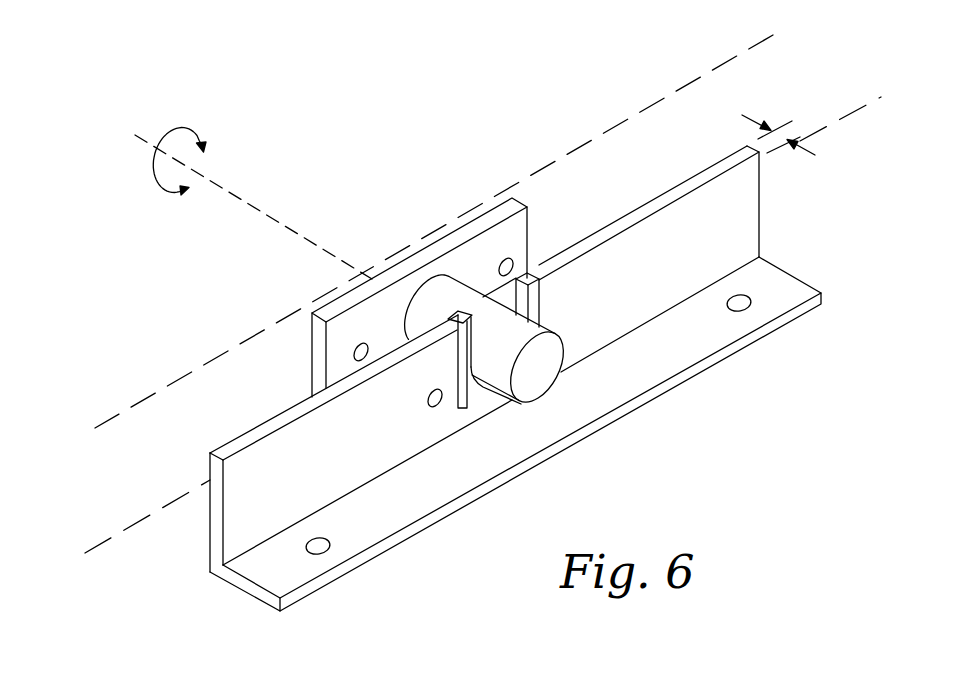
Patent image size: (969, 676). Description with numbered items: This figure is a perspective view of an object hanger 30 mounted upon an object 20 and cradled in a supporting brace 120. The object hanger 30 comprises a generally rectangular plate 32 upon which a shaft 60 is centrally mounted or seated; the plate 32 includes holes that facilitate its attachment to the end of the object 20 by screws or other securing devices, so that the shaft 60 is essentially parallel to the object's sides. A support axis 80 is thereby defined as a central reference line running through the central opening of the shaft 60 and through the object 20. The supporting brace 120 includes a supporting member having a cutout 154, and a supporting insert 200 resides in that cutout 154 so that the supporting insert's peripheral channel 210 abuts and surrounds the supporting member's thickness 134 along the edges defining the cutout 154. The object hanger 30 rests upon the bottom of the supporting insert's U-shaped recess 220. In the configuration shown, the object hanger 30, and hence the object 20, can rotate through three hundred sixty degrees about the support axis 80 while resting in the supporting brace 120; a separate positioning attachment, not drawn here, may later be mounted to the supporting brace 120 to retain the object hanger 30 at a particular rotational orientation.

The object 20 is at (474, 399).
The object hanger 30 is at (393, 257).
The plate 32 is at (363, 313).
The shaft 60 is at (539, 377).
The support axis 80 is at (251, 200).
The supporting brace 120 is at (265, 573).
The supporting member's thickness 134 is at (792, 127).
The cutout 154 is at (541, 302).
The supporting insert 200 is at (459, 384).
The peripheral channel 210 is at (528, 273).
The U-shaped recess 220 is at (481, 386).